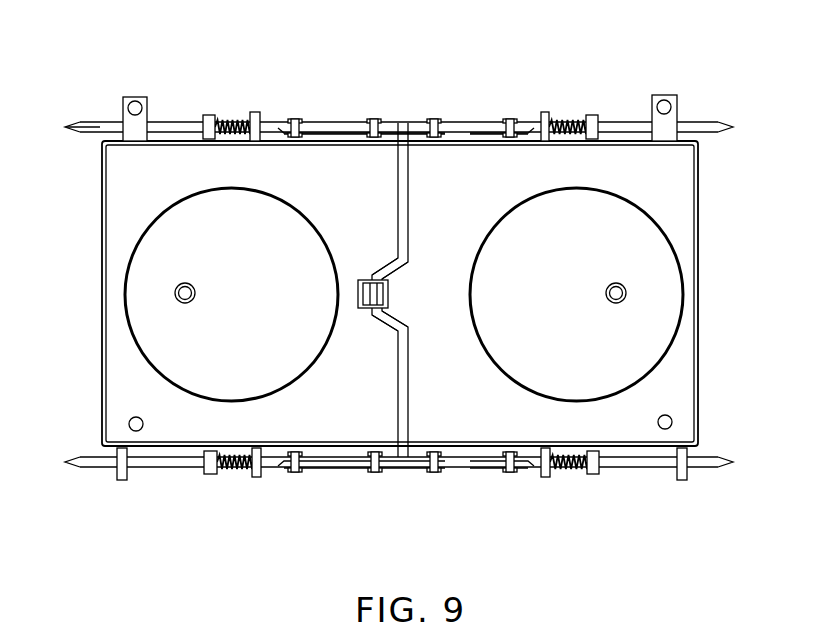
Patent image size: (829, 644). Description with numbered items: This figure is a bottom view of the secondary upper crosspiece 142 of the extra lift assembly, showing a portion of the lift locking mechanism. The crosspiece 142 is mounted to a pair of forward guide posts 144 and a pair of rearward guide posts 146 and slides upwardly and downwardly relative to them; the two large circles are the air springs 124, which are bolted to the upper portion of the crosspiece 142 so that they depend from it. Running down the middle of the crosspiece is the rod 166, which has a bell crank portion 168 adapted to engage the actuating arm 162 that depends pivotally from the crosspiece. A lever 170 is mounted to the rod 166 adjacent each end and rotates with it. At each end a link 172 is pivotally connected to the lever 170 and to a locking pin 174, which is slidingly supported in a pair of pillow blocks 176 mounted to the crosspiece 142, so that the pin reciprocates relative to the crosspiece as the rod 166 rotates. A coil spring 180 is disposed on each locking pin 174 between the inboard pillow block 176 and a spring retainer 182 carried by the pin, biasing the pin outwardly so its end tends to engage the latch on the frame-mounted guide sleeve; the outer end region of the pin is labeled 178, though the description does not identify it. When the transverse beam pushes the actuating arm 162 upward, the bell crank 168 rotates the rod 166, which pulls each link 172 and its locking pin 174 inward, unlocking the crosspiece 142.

The air spring 124 is at (612, 190).
The secondary upper crosspiece 142 is at (462, 185).
The forward guide post 144 is at (131, 100).
The rearward guide post 146 is at (130, 416).
The actuating arm 162 is at (360, 280).
The rod 166 is at (409, 352).
The bell crank portion 168 is at (402, 312).
The lever 170 is at (411, 130).
The link 172 is at (342, 131).
The locking pin 174 is at (162, 122).
The pillow block 176 is at (543, 476).
The rod end 178 is at (105, 124).
The coil spring 180 is at (243, 119).
The spring retainer 182 is at (209, 115).